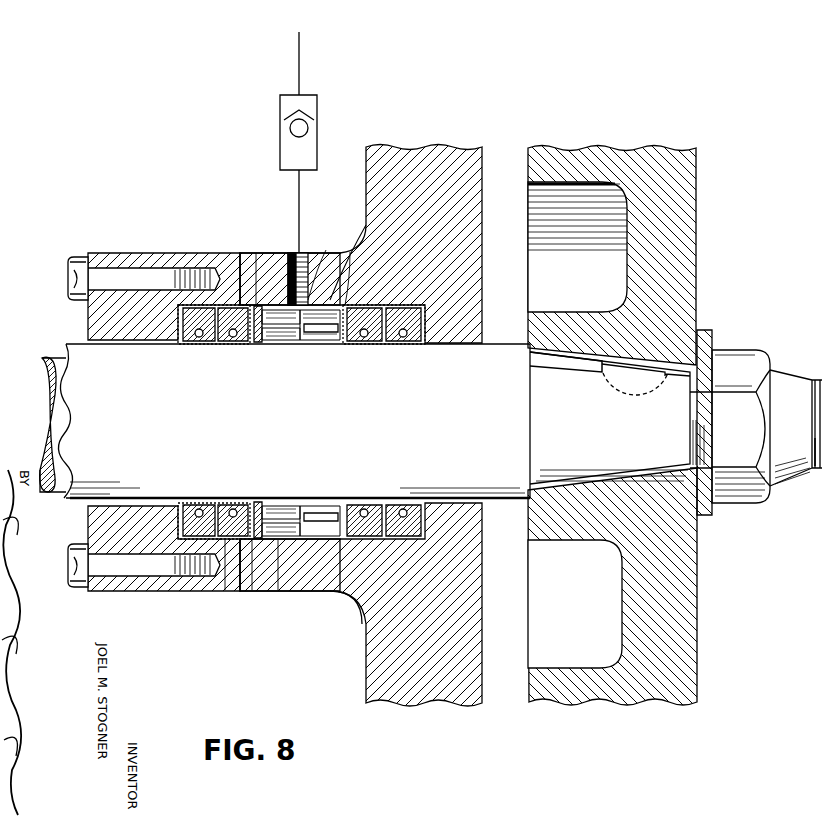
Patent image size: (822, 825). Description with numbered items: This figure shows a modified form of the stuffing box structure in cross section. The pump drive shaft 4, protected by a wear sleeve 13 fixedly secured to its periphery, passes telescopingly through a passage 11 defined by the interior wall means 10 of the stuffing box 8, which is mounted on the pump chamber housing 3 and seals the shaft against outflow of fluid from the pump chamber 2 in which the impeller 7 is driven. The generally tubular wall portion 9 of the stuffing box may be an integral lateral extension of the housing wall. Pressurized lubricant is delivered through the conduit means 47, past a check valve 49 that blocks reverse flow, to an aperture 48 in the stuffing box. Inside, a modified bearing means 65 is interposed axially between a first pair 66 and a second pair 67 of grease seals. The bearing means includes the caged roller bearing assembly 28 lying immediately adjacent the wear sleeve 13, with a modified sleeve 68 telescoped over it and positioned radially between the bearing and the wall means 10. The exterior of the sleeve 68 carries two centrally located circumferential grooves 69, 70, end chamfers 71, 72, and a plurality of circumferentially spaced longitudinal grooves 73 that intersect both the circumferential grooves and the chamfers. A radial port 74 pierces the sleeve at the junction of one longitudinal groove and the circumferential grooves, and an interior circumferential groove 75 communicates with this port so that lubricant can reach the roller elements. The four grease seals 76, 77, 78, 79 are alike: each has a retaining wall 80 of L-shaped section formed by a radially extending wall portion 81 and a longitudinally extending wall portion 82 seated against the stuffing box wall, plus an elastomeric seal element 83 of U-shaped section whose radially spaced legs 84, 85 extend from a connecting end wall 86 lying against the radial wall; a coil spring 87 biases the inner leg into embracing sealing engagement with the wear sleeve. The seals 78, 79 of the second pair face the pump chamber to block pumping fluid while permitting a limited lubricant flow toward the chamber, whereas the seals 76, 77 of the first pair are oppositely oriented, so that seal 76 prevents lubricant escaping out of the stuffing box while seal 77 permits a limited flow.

The pump chamber 2 is at (740, 222).
The pump chamber housing 3 is at (471, 202).
The pump drive shaft 4 is at (46, 388).
The impeller 7 is at (684, 286).
The stuffing box 8 is at (192, 250).
The tubular wall portion 9 is at (238, 253).
The interior wall means 10 is at (172, 578).
The passage 11 is at (170, 334).
The wear sleeve 13 is at (80, 354).
The caged roller bearing assembly 28 is at (320, 334).
The conduit means 47 is at (300, 55).
The aperture 48 is at (302, 300).
The check valve 49 is at (280, 133).
The modified bearing means 65 is at (280, 590).
The first pair of grease seals 66 is at (210, 590).
The second pair of grease seals 67 is at (342, 599).
The modified sleeve 68 is at (316, 506).
The circumferentially extending groove 69 is at (289, 300).
The circumferentially extending groove 70 is at (316, 295).
The end chamfer 71 is at (256, 301).
The end chamfer 72 is at (350, 254).
The longitudinally extending grooves 73 is at (262, 342).
The radial port 74 is at (304, 342).
The centrally located groove 75 is at (286, 344).
The grease seal 76 is at (198, 344).
The grease seal 77 is at (230, 344).
The grease seal 78 is at (374, 344).
The grease seal 79 is at (412, 344).
The retaining wall 80 is at (252, 590).
The radially extending wall portion 81 is at (264, 506).
The longitudinally extending wall portion 82 is at (228, 590).
The elastomeric seal element 83 is at (206, 506).
The leg 84 is at (190, 505).
The leg 85 is at (184, 510).
The connecting end wall 86 is at (180, 590).
The coil spring 87 is at (252, 505).